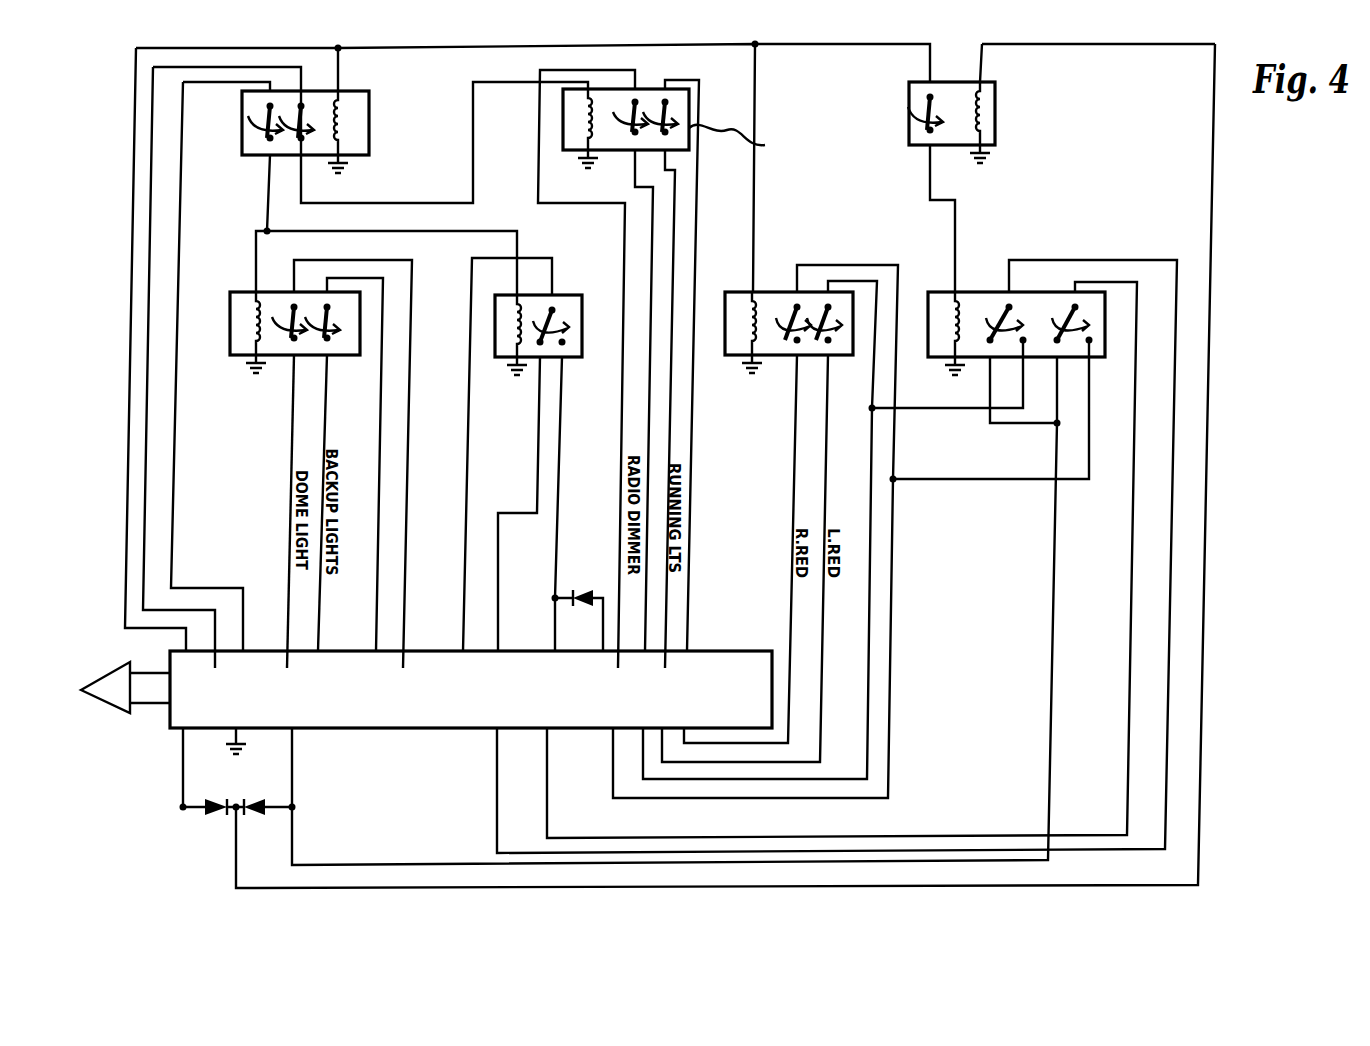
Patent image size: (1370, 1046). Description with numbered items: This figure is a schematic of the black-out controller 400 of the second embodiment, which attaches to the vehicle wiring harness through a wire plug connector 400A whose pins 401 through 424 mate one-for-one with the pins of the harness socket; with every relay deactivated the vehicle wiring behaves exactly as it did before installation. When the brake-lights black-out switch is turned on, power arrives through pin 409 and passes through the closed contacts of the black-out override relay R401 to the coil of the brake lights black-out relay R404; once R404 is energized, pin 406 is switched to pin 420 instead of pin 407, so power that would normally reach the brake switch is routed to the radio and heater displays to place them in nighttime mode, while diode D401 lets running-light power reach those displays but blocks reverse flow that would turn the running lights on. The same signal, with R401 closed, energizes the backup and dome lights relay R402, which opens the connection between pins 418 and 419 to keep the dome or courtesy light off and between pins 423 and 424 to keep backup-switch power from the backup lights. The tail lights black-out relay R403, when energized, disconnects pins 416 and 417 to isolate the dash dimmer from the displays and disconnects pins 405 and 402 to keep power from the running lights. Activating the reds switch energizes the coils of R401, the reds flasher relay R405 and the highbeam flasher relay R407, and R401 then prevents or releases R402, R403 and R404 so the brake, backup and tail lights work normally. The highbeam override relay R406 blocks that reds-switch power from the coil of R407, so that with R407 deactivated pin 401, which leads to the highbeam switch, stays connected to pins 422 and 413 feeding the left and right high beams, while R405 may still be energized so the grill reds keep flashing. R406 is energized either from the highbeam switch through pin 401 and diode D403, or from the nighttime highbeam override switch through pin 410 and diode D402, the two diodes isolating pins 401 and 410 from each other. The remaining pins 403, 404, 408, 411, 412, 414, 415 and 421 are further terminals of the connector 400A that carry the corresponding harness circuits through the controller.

The black-out controller 400 is at (1248, 239).
The wire plug connector 400A is at (172, 716).
The pin 401 is at (669, 611).
The pin 402 is at (661, 421).
The pin 403 is at (748, 531).
The pin 404 is at (751, 530).
The pin 405 is at (684, 377).
The pin 406 is at (499, 466).
The pin 407 is at (514, 515).
The pin 408 is at (185, 379).
The pin 409 is at (212, 378).
The pin 410 is at (190, 761).
The pin 411 is at (165, 361).
The pin 412 is at (234, 732).
The pin 413 is at (833, 560).
The pin 414 is at (739, 558).
The pin 415 is at (734, 549).
The pin 416 is at (586, 381).
The pin 417 is at (646, 412).
The pin 418 is at (286, 523).
The pin 419 is at (355, 476).
The pin 420 is at (554, 515).
The pin 421 is at (597, 636).
The pin 422 is at (829, 556).
The pin 423 is at (321, 514).
The pin 424 is at (358, 476).
The black-out override relay R401 is at (369, 131).
The backup and dome lights relay R402 is at (280, 314).
The tail lights black-out relay R403 is at (695, 113).
The brake lights black-out relay R404 is at (555, 329).
The reds flasher relay R405 is at (780, 310).
The highbeam override relay R406 is at (995, 135).
The highbeam flasher relay R407 is at (1028, 303).
The diode D401 is at (580, 586).
The diode D402 is at (214, 796).
The diode D403 is at (263, 796).